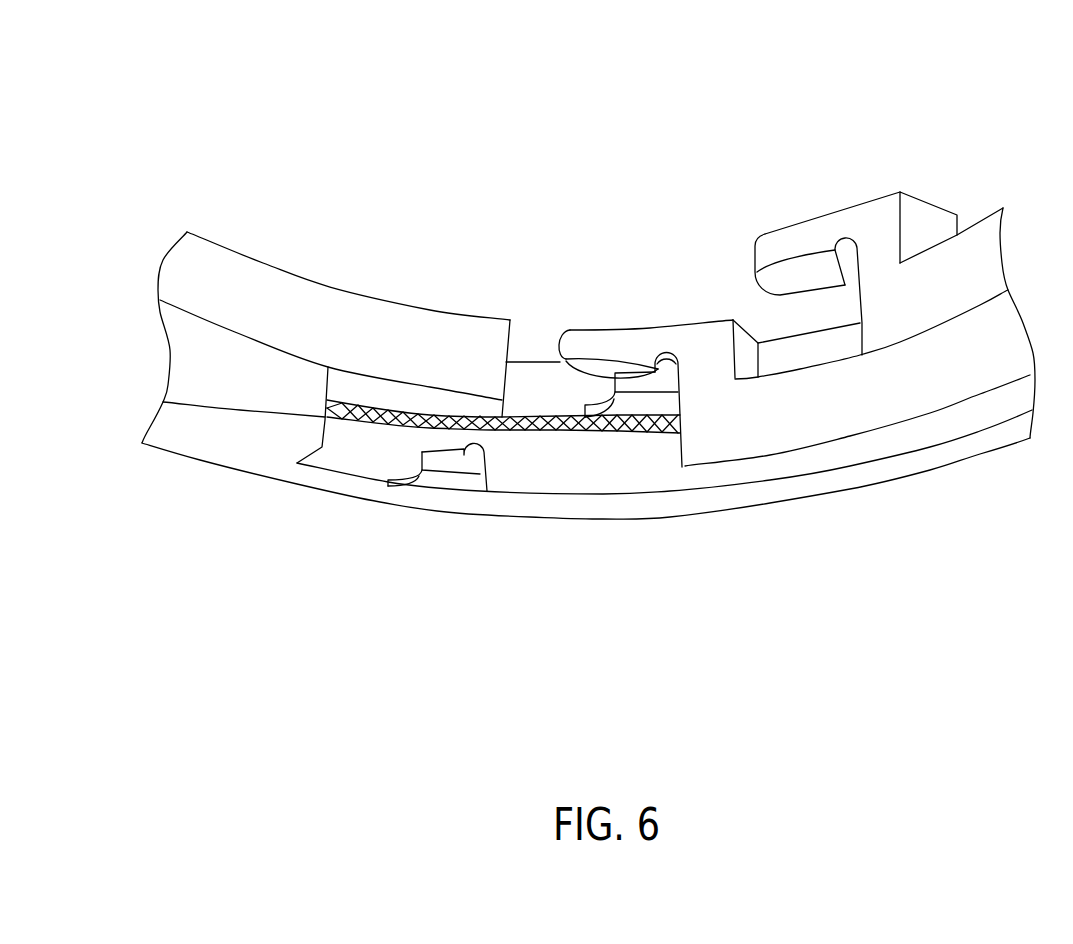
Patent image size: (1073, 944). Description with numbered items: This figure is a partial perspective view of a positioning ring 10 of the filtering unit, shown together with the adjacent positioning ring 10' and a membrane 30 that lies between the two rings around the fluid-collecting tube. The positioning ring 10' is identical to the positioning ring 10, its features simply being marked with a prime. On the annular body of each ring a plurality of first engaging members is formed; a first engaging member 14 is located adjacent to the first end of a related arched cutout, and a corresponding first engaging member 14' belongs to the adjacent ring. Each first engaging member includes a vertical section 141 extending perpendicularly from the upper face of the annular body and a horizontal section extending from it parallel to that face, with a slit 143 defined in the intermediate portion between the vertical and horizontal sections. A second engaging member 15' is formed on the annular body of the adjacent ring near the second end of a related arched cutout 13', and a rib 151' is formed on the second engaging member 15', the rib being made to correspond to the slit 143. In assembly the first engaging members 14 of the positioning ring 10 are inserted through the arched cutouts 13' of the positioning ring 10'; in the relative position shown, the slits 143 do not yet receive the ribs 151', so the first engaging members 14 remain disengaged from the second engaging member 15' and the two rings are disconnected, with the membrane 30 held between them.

The positioning ring 10 is at (587, 498).
The positioning ring 10' is at (885, 234).
The arched cutout 13' is at (356, 287).
The first engaging member 14 is at (608, 307).
The first engaging member 14' is at (827, 216).
The vertical section 141 is at (712, 335).
The slit 143 is at (666, 362).
The second engaging member 15' is at (631, 294).
The rib 151' is at (673, 500).
The membrane 30 is at (540, 432).